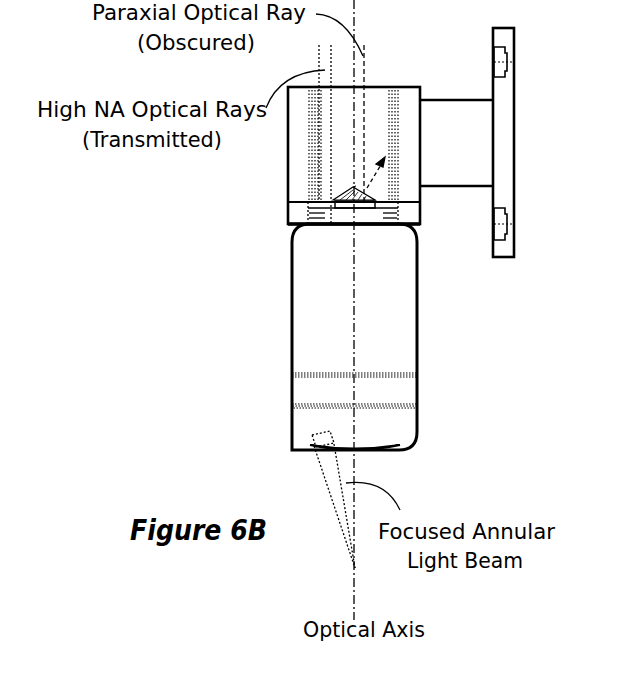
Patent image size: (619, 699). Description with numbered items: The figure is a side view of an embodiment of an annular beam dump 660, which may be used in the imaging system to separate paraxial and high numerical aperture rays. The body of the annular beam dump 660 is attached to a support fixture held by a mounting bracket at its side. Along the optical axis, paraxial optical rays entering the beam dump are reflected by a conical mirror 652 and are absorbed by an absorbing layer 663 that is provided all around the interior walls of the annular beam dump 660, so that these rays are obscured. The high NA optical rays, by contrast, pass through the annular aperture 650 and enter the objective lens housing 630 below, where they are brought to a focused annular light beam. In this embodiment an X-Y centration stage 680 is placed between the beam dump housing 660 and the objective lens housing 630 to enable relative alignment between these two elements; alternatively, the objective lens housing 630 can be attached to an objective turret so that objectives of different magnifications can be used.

The annular beam dump 660 is at (288, 167).
The X-Y centration stage 680 is at (290, 207).
The annular aperture 650 is at (308, 206).
The conical mirror 652 is at (365, 193).
The absorbing layer 663 is at (398, 130).
The objective lens housing 630 is at (418, 362).